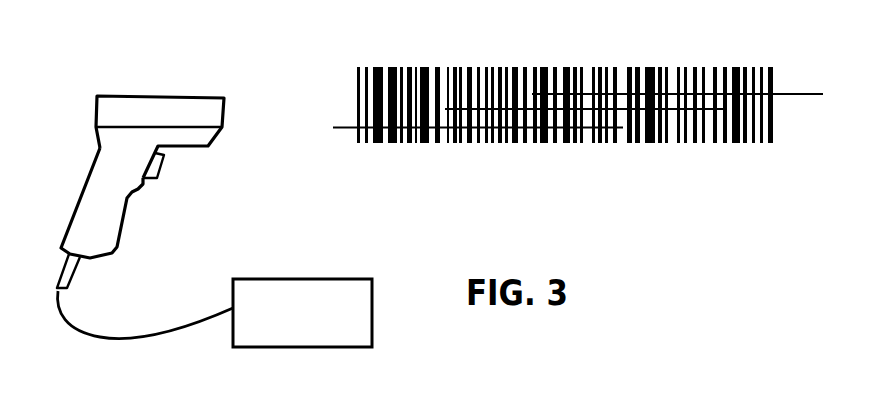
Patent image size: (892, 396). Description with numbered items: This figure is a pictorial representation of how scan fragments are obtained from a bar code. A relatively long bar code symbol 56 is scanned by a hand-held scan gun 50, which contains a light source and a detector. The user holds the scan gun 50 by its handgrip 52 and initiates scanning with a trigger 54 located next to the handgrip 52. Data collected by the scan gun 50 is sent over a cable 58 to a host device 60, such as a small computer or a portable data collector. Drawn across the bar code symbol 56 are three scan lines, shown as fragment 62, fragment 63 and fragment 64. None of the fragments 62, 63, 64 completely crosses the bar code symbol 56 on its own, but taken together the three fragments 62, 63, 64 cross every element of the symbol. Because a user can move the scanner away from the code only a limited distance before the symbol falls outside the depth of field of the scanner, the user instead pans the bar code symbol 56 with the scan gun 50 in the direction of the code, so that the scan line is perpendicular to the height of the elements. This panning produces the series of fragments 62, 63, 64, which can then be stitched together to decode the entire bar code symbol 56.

The hand-held scan gun 50 is at (163, 97).
The handgrip 52 is at (128, 215).
The trigger 54 is at (164, 166).
The bar code symbol 56 is at (553, 60).
The cable 58 is at (126, 336).
The host device 60 is at (288, 312).
The fragment 62 is at (347, 127).
The fragment 63 is at (683, 93).
The fragment 64 is at (810, 93).